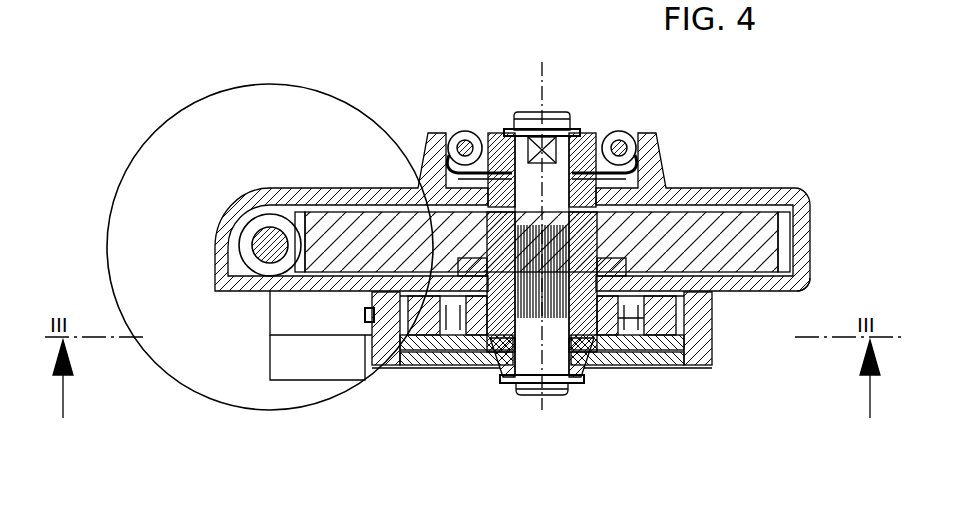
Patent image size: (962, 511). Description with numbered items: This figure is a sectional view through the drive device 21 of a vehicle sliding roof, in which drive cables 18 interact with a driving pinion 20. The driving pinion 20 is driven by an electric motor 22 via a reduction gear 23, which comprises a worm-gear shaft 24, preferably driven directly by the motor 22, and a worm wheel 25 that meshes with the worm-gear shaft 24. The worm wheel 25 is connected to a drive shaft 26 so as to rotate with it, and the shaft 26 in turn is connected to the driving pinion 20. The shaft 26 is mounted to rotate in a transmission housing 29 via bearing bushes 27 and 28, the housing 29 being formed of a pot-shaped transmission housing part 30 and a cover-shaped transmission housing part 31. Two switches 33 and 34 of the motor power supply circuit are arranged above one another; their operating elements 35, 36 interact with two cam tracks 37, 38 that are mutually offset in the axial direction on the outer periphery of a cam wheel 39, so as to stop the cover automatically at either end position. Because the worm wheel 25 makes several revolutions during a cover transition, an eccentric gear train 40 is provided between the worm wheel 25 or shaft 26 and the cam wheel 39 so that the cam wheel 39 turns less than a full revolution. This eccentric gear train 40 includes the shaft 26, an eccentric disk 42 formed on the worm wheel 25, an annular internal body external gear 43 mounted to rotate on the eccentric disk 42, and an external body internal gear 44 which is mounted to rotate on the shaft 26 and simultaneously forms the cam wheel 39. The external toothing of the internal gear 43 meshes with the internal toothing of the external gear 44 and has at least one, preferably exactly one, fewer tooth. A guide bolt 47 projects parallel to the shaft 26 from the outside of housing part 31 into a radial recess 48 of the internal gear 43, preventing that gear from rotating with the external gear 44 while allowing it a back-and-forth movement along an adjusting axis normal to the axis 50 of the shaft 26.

The drive cable 18 is at (465, 145).
The driving pinion 20 is at (492, 133).
The drive device 21 is at (776, 144).
The electric motor 22 is at (158, 162).
The reduction gear 23 is at (262, 160).
The worm-gear shaft 24 is at (275, 240).
The worm wheel 25 is at (750, 240).
The drive shaft 26 is at (557, 357).
The bearing bush 27 is at (651, 187).
The bearing bush 28 is at (502, 293).
The transmission housing 29 is at (359, 178).
The pot-shaped transmission housing part 30 is at (707, 185).
The cover-shaped transmission housing part 31 is at (797, 295).
The switch 33 is at (298, 362).
The switch 34 is at (281, 313).
The operating element 35 is at (368, 322).
The operating element 36 is at (383, 357).
The cam track 37 is at (712, 352).
The cam track 38 is at (718, 312).
The cam wheel 39 is at (678, 355).
The eccentric gear train 40 is at (722, 380).
The eccentric disk 42 is at (496, 357).
The internal body external gear 43 is at (600, 367).
The external body internal gear 44 is at (465, 330).
The guide bolt 47 is at (652, 355).
The radial recess 48 is at (620, 358).
The axis 50 is at (543, 87).